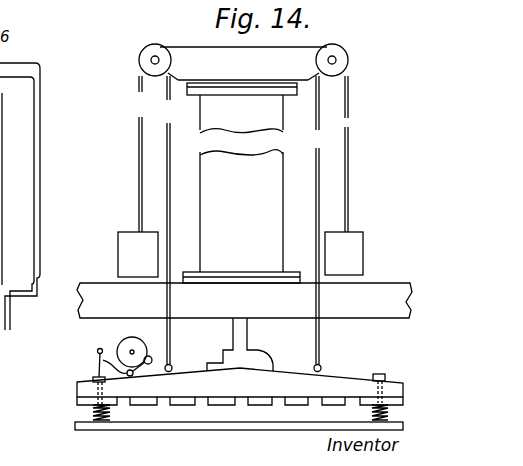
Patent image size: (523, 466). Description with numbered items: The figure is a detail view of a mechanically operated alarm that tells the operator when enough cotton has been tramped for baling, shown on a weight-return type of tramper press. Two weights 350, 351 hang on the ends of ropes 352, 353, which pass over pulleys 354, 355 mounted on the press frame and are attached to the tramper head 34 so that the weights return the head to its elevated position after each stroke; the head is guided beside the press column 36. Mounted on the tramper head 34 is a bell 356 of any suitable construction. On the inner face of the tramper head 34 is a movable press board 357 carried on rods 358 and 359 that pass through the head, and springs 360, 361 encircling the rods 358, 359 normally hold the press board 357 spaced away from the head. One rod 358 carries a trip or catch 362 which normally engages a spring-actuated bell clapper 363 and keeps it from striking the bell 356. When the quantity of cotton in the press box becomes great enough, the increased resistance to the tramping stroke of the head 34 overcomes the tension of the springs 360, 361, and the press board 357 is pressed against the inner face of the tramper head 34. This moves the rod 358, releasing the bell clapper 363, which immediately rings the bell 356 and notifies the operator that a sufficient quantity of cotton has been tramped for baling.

The tramper head 34 is at (280, 376).
The column 36 is at (203, 168).
The weight 350 is at (119, 233).
The weight 351 is at (355, 239).
The rope 352 is at (168, 180).
The rope 353 is at (319, 192).
The pulley 354 is at (148, 44).
The pulley 355 is at (347, 57).
The bell 356 is at (122, 345).
The press board 357 is at (238, 431).
The rod 358 is at (92, 400).
The rod 359 is at (393, 381).
The spring 360 is at (93, 415).
The spring 361 is at (371, 409).
The trip or catch 362 is at (96, 356).
The bell clapper 363 is at (151, 361).